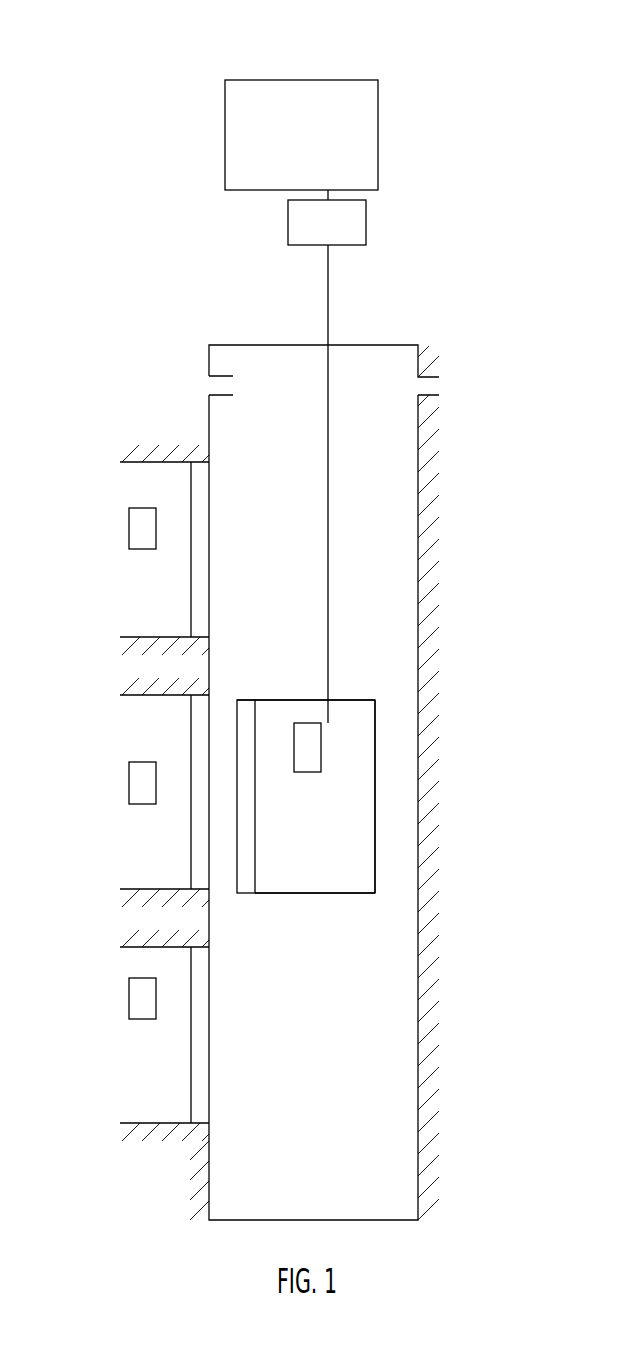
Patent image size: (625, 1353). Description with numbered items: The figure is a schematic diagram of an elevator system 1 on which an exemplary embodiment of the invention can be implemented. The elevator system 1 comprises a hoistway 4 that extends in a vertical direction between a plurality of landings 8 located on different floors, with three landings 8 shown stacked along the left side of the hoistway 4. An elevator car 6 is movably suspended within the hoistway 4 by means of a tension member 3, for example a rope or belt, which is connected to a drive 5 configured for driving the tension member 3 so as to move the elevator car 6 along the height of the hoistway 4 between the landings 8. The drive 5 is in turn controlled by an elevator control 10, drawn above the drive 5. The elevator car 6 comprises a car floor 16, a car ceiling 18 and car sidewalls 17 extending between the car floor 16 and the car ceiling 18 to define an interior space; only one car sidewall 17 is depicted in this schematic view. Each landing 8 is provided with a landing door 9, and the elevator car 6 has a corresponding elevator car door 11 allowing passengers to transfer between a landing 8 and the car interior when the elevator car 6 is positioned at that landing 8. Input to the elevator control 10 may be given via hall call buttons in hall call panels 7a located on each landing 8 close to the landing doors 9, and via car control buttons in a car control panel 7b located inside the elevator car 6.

The elevator system 1 is at (443, 57).
The tension member 3 is at (328, 330).
The hoistway 4 is at (212, 318).
The drive 5 is at (306, 237).
The elevator car 6 is at (307, 794).
The hall call panel 7a is at (140, 527).
The car control panel 7b is at (308, 772).
The landing 8 is at (171, 793).
The landing door 9 is at (197, 577).
The elevator control 10 is at (232, 127).
The elevator car door 11 is at (245, 893).
The car floor 16 is at (292, 890).
The car sidewall 17 is at (375, 840).
The car ceiling 18 is at (352, 700).